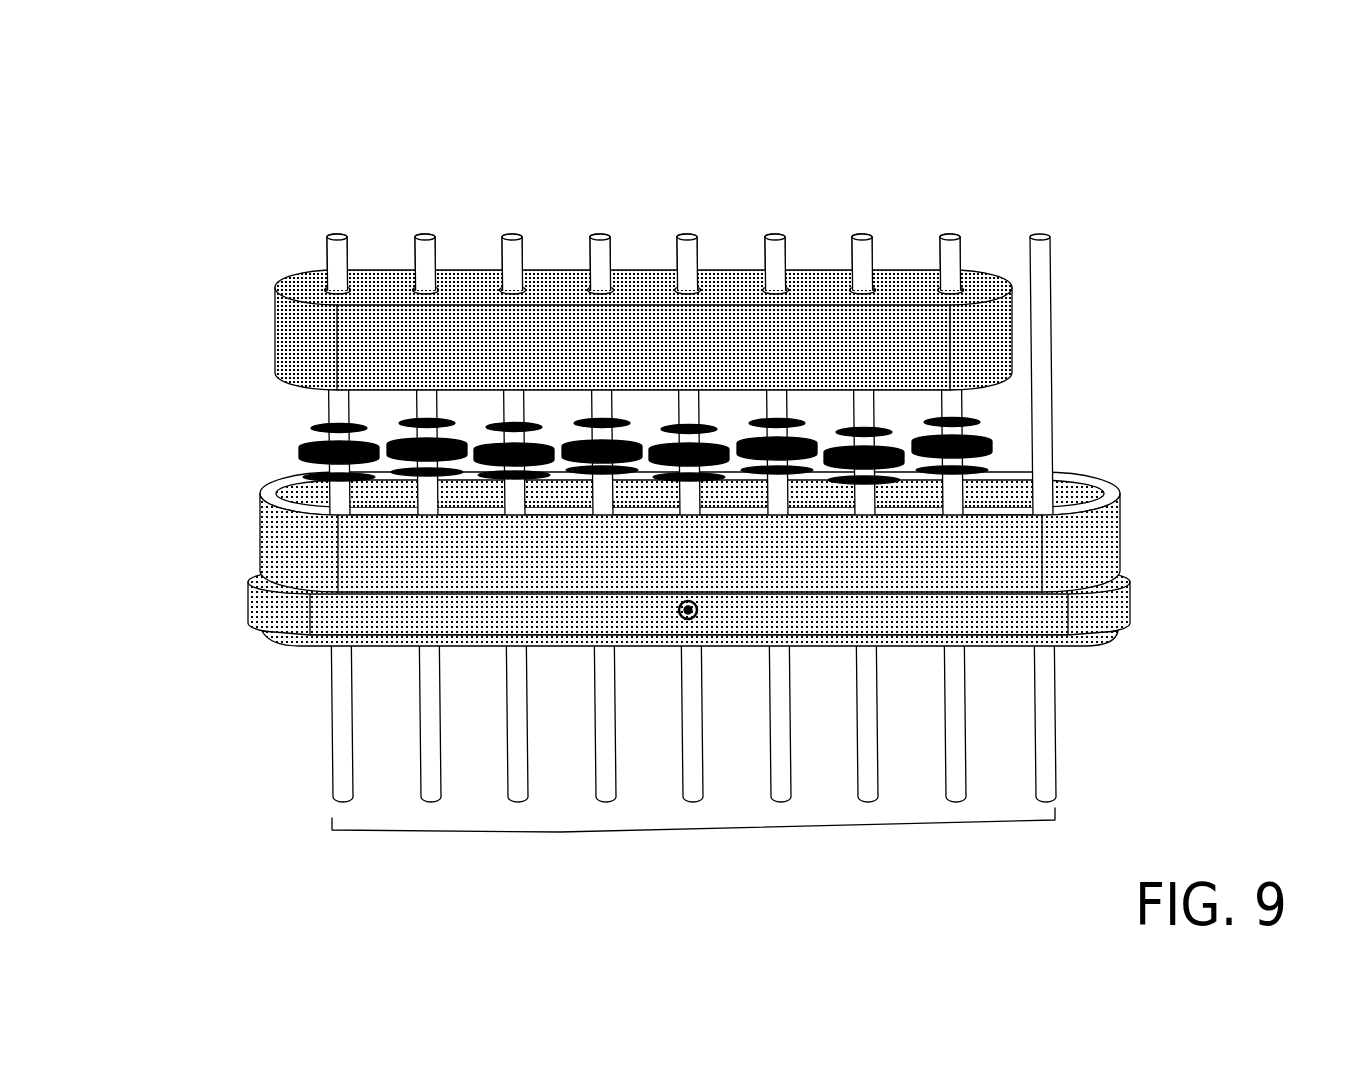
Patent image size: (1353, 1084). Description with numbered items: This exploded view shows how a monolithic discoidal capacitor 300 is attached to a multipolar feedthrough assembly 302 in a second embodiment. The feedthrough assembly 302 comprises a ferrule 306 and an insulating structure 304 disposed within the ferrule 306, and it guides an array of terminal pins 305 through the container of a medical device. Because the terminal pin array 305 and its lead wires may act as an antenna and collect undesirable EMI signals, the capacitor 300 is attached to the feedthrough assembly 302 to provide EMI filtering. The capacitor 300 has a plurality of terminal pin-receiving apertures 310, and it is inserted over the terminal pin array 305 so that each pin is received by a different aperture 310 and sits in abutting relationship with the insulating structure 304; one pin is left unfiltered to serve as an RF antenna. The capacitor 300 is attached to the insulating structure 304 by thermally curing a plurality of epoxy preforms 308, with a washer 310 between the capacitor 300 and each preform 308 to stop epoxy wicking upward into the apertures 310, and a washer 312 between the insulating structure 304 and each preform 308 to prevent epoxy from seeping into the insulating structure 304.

The monolithic discoidal capacitor 300 is at (275, 335).
The multipolar feedthrough assembly 302 is at (1123, 140).
The insulating structure 304 is at (1063, 502).
The terminal pin array 305 is at (693, 827).
The ferrule 306 is at (1105, 552).
The epoxy preforms 308 is at (305, 455).
The terminal pin-receiving apertures 310 is at (352, 290).
The washer 312 is at (317, 477).